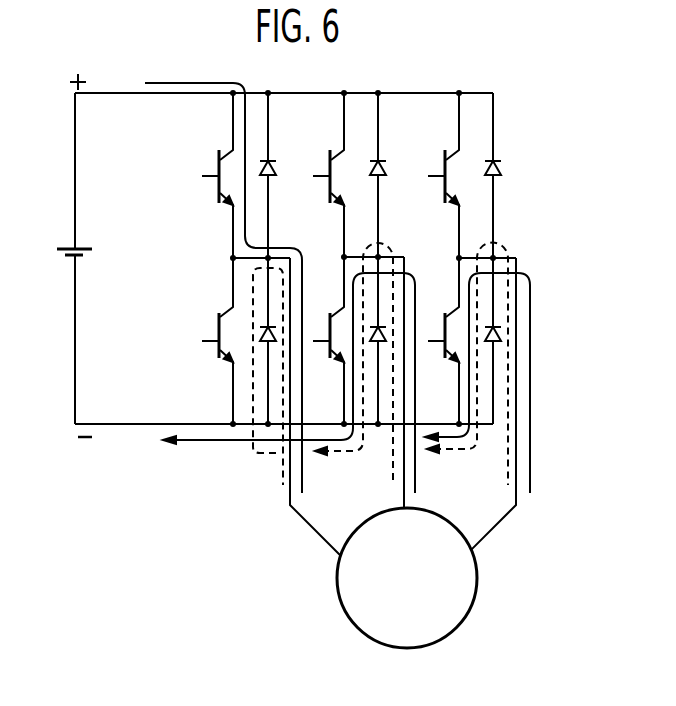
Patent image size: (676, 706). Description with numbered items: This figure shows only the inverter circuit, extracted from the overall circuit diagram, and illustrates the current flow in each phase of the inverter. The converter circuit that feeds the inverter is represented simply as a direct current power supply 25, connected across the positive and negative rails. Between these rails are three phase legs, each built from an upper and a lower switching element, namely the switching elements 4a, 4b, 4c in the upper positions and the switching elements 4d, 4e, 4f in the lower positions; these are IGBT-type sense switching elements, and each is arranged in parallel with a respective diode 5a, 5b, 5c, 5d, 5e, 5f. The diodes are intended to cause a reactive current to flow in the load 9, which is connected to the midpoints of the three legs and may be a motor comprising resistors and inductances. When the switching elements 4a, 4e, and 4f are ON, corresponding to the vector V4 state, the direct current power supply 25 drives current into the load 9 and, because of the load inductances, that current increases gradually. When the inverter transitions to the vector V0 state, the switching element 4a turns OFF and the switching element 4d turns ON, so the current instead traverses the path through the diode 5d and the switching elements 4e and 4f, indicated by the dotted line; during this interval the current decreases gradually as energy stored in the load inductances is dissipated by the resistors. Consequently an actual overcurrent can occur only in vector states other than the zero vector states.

The switching element 4a is at (208, 176).
The switching element 4b is at (322, 175).
The switching element 4c is at (436, 175).
The switching element 4d is at (208, 341).
The switching element 4e is at (327, 340).
The switching element 4f is at (441, 341).
The diode 5a is at (273, 160).
The diode 5b is at (382, 160).
The diode 5c is at (498, 160).
The diode 5d is at (262, 326).
The diode 5e is at (372, 326).
The diode 5f is at (487, 326).
The direct current power supply 25 is at (58, 249).
The load 9 is at (342, 613).